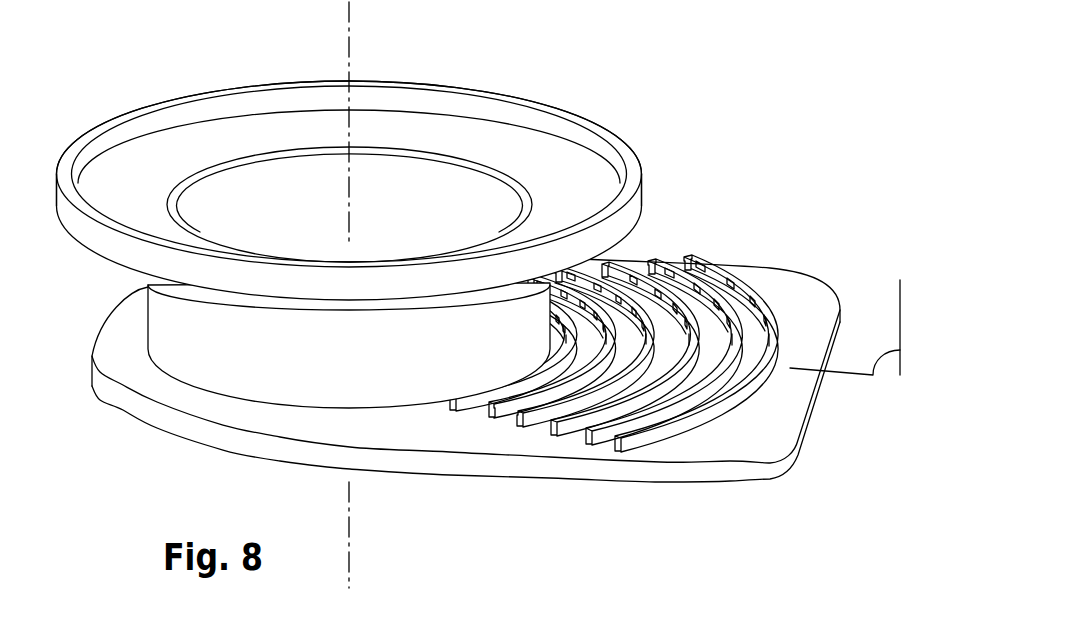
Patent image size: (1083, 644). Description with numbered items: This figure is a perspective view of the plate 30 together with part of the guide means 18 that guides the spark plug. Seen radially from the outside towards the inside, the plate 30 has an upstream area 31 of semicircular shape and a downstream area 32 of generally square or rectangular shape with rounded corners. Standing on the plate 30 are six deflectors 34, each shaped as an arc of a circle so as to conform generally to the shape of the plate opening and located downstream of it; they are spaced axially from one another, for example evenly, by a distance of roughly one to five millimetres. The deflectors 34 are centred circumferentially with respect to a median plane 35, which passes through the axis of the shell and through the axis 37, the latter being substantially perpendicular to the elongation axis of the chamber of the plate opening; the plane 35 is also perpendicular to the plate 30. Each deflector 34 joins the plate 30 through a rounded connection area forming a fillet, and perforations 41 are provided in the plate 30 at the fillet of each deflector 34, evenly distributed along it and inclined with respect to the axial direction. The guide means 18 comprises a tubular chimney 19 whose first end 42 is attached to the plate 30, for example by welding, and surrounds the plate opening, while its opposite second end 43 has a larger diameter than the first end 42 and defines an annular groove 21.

The guide means 18 is at (381, 176).
The tubular chimney 19 is at (133, 268).
The annular groove 21 is at (148, 148).
The second end 43 is at (643, 198).
The plate 30 is at (447, 388).
The upstream area 31 is at (157, 426).
The downstream area 32 is at (763, 465).
The deflectors 34 is at (614, 354).
The median plane 35 is at (900, 307).
The axis 37 is at (349, 567).
The perforations 41 is at (730, 280).
The first end 42 is at (146, 368).